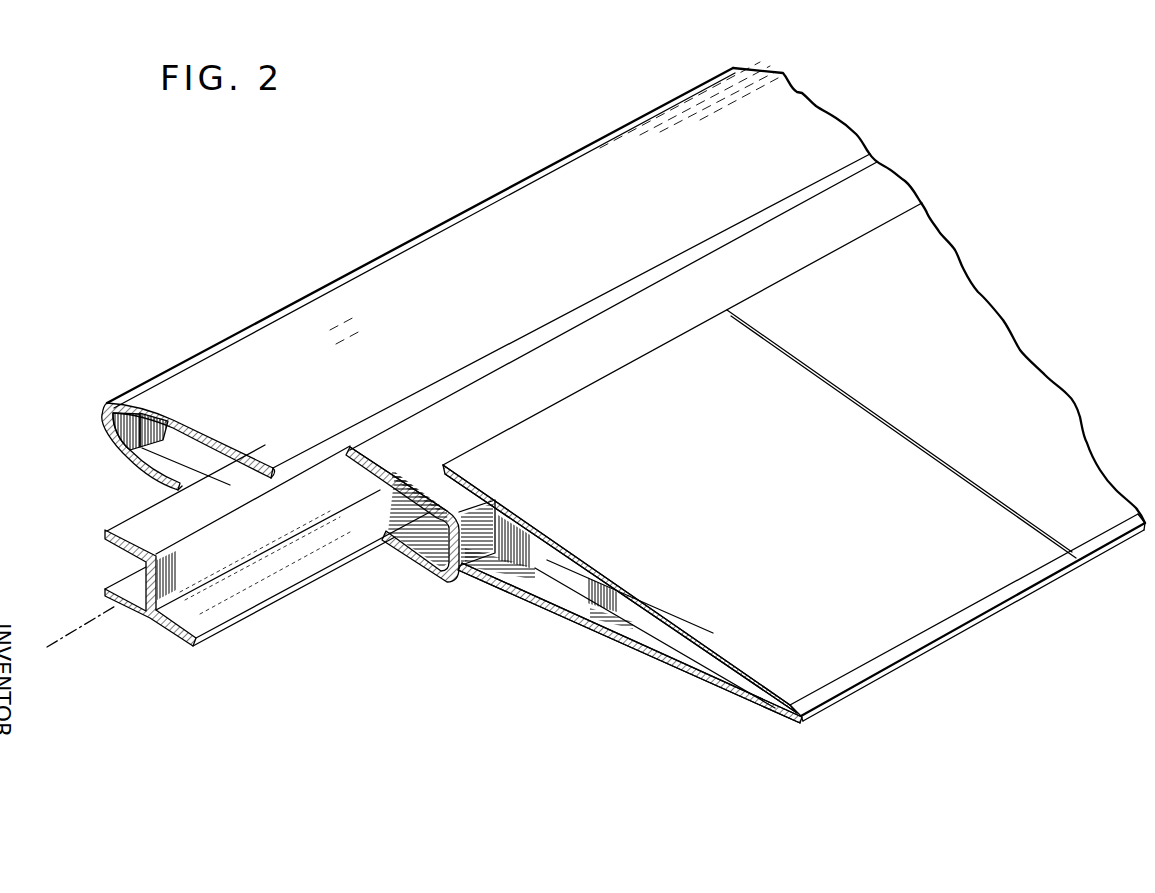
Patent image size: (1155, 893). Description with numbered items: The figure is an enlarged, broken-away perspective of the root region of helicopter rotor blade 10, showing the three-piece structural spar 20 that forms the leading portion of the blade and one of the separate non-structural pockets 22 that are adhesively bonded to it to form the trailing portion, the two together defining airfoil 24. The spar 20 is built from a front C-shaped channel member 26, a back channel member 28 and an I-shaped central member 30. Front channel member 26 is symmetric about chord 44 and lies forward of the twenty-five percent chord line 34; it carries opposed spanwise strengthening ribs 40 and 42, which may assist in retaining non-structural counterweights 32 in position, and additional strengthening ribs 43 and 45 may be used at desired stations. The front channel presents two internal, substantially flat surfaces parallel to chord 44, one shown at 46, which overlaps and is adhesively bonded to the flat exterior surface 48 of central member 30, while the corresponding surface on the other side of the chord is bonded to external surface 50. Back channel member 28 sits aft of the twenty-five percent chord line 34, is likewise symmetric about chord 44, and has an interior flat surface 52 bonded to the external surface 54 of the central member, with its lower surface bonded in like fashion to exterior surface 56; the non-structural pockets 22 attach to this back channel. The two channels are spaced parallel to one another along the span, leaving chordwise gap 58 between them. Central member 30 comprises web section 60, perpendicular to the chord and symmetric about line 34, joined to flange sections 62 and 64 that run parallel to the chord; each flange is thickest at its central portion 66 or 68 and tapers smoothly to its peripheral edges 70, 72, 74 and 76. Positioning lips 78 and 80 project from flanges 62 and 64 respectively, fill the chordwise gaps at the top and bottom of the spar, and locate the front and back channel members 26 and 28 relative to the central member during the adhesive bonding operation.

The helicopter rotor blade 10 is at (536, 140).
The structural spar 20 is at (423, 236).
The non-structural pockets 22 is at (962, 623).
The airfoil 24 is at (737, 440).
The front channel member 26 is at (345, 300).
The back channel member 28 is at (470, 553).
The central member 30 is at (222, 613).
The non-structural counterweights 32 is at (103, 440).
The 25% chord line 34 is at (72, 648).
The strengthening rib 40 is at (140, 414).
The strengthening rib 42 is at (140, 460).
The additional strengthening rib 43 is at (217, 410).
The chord 44 is at (620, 613).
The additional strengthening rib 45 is at (180, 481).
The internal flat surface 46 is at (267, 452).
The exterior flat surface 48 is at (216, 508).
The external flat surface 50 is at (113, 607).
The interior flat surface 52 is at (368, 470).
The external flat surface 54 is at (338, 500).
The exterior surface 56 is at (180, 643).
The chordwise gap 58 is at (668, 267).
The web section 60 is at (147, 620).
The flange section 62 is at (183, 562).
The flange section 64 is at (167, 640).
The central portion 66 is at (147, 557).
The central portion 68 is at (163, 637).
The peripheral edge 70 is at (133, 523).
The peripheral edge 72 is at (220, 557).
The peripheral edge 74 is at (117, 587).
The peripheral edge 76 is at (277, 588).
The positioning lip 78 is at (224, 516).
The positioning lip 80 is at (147, 623).